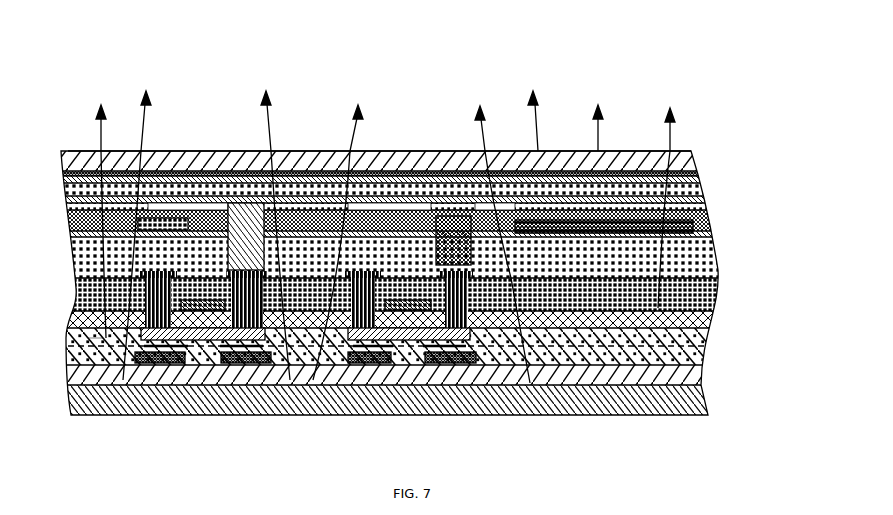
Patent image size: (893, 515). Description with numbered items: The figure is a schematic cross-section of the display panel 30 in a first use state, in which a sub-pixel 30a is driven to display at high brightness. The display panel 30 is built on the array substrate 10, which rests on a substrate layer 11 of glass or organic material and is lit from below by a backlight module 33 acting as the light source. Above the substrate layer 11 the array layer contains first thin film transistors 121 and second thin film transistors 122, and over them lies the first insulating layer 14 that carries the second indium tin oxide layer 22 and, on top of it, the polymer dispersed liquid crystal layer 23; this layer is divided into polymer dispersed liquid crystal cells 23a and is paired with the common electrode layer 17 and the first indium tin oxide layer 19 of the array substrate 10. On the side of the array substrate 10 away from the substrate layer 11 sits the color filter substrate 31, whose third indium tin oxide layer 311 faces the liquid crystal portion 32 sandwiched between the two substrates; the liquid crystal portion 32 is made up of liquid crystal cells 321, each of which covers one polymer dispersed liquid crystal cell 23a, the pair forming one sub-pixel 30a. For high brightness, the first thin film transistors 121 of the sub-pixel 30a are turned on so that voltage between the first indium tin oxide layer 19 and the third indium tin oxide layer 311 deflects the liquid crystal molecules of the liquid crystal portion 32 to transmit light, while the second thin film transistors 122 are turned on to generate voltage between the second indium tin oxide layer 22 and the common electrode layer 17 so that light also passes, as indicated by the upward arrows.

The display panel 30 is at (412, 243).
The sub-pixel 30a is at (418, 165).
The third indium tin oxide layer 311 is at (87, 335).
The liquid crystal cell 321 is at (560, 188).
The polymer dispersed liquid crystal layer 23 is at (578, 210).
The second indium tin oxide layer 22 is at (600, 262).
The common electrode layer 17 is at (648, 305).
The first indium tin oxide layer 19 is at (703, 175).
The color filter substrate 31 is at (396, 156).
The liquid crystal portion 32 is at (697, 184).
The first insulating layer 14 is at (697, 233).
The array substrate 10 is at (412, 306).
The backlight module 33 is at (673, 403).
The first thin film transistor 121 is at (197, 310).
The second thin film transistor 122 is at (405, 310).
The substrate layer 11 is at (530, 143).
The polymer dispersed liquid crystal cell 23a is at (590, 143).